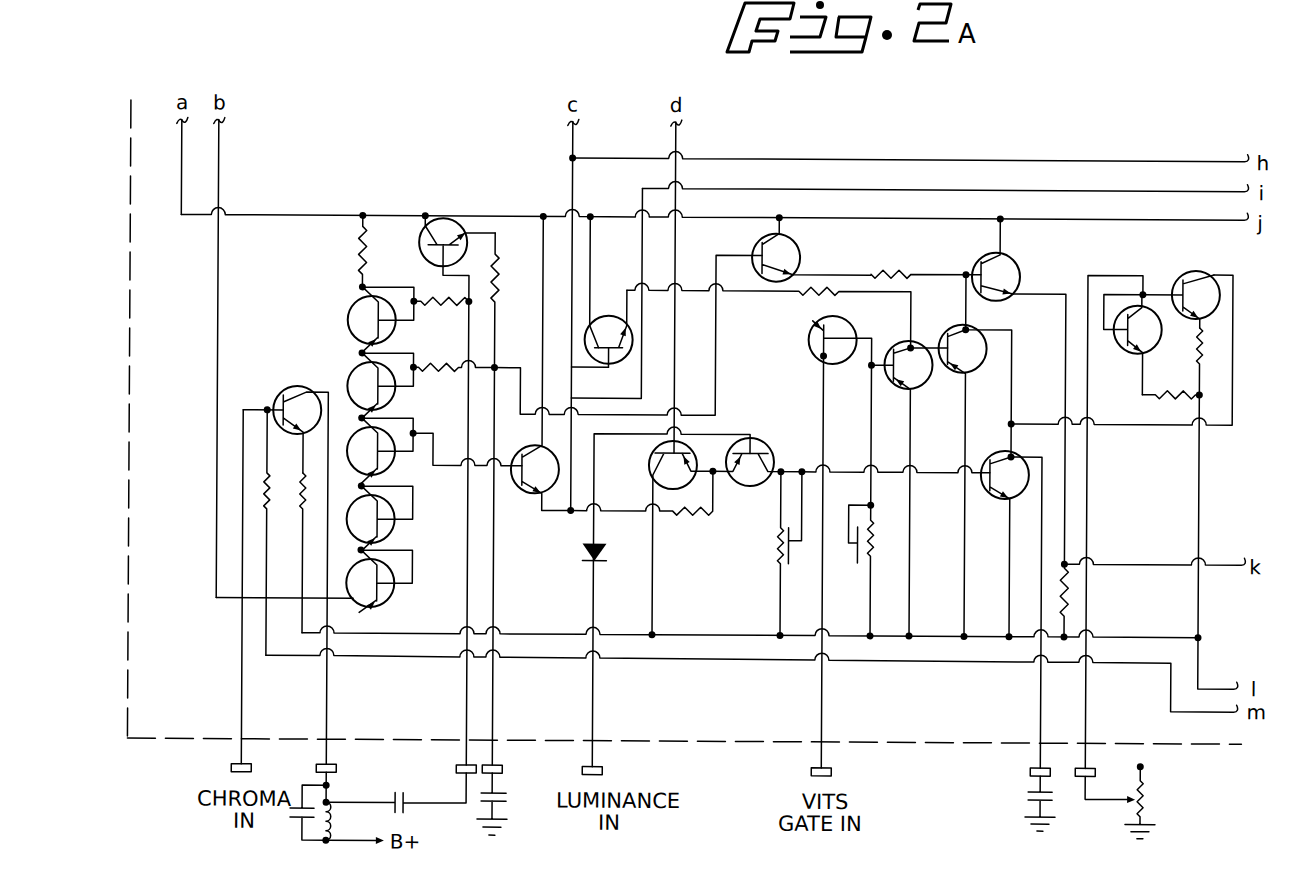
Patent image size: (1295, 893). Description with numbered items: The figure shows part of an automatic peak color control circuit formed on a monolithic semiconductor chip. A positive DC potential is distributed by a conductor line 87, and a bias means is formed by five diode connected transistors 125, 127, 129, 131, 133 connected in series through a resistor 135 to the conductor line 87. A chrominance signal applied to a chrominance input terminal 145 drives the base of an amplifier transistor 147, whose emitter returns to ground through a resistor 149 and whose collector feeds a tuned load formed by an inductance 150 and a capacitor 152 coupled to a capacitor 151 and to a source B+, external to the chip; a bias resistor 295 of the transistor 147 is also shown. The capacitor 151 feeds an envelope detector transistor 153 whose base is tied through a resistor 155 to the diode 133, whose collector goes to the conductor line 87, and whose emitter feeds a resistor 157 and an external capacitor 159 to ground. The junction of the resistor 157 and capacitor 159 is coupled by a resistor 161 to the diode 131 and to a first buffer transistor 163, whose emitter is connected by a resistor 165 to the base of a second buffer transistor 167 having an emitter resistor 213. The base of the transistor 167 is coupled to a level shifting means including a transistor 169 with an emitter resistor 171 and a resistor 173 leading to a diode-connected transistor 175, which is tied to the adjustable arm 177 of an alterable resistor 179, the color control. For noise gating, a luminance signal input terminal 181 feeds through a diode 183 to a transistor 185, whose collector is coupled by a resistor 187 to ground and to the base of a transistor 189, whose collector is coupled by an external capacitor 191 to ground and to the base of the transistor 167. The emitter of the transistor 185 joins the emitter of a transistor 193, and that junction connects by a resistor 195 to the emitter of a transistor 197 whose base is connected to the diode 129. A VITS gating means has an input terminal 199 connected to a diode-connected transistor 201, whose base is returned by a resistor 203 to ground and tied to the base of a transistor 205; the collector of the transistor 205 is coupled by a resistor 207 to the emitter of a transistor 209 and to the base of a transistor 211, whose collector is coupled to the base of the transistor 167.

The conductor line 87 is at (305, 212).
The diode connected transistor 125 is at (387, 588).
The diode connected transistor 127 is at (398, 529).
The diode connected transistor 129 is at (396, 470).
The diode connected transistor 131 is at (352, 362).
The diode connected transistor 133 is at (352, 309).
The resistor 135 is at (356, 251).
The chrominance input terminal 145 is at (233, 770).
The transistor 147 is at (280, 392).
The resistor 149 is at (300, 500).
The inductance 150 is at (338, 823).
The capacitor 151 is at (401, 792).
The capacitor 152 is at (297, 818).
The transistor 153 is at (418, 257).
The resistor 155 is at (437, 306).
The resistor 157 is at (494, 287).
The capacitor 159 is at (508, 805).
The resistor 161 is at (437, 375).
The transistor 163 is at (797, 262).
The resistor 165 is at (897, 270).
The transistor 167 is at (982, 258).
The transistor 169 is at (1198, 270).
The resistor 171 is at (1195, 355).
The resistor 173 is at (1182, 400).
The diode-connected transistor 175 is at (1122, 352).
The adjustable arm 177 is at (1087, 800).
The alterable resistor 179 is at (1146, 792).
The luminance signal input terminal 181 is at (605, 771).
The diode 183 is at (618, 541).
The transistor 185 is at (764, 443).
The resistor 187 is at (778, 538).
The transistor 189 is at (1024, 447).
The capacitor 191 is at (1031, 770).
The transistor 193 is at (650, 463).
The resistor 195 is at (696, 515).
The transistor 197 is at (517, 498).
The input terminal 199 is at (833, 771).
The diode-connected transistor 201 is at (810, 348).
The resistor 203 is at (880, 546).
The transistor 205 is at (893, 343).
The resistor 207 is at (806, 295).
The transistor 209 is at (617, 363).
The transistor 211 is at (941, 332).
The resistor 213 is at (1077, 595).
The bias resistor 295 is at (262, 491).